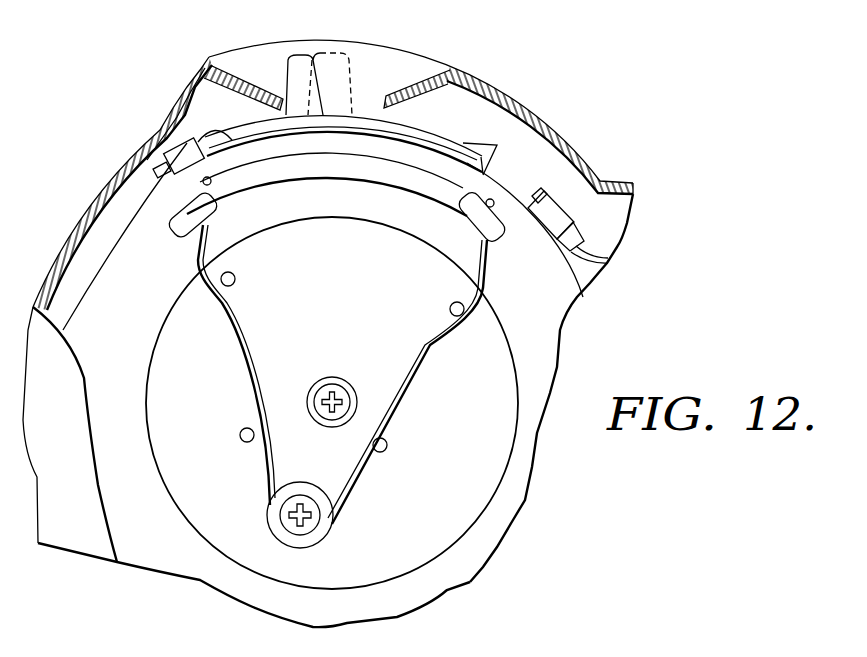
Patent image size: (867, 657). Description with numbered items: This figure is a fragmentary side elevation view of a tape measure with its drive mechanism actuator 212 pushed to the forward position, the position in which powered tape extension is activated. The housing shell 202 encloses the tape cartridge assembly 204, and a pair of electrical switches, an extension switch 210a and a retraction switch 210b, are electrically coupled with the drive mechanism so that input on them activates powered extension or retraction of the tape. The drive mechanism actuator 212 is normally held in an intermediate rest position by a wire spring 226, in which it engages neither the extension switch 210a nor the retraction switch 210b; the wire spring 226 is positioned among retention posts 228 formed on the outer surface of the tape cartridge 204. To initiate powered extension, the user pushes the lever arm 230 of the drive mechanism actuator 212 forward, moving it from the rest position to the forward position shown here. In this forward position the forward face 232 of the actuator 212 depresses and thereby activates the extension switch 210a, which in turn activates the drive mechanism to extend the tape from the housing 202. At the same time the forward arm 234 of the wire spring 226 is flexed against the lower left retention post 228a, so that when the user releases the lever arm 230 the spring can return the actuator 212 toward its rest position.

The housing shell 202 is at (60, 237).
The tape cartridge assembly 204 is at (150, 560).
The extension switch 210a is at (162, 153).
The retraction switch 210b is at (538, 195).
The drive mechanism actuator 212 is at (323, 167).
The wire spring 226 is at (347, 488).
The retention posts 228 is at (235, 276).
The lower left retention post 228a is at (240, 432).
The lever arm 230 is at (300, 60).
The forward face 232 is at (180, 105).
The forward arm 234 is at (241, 340).